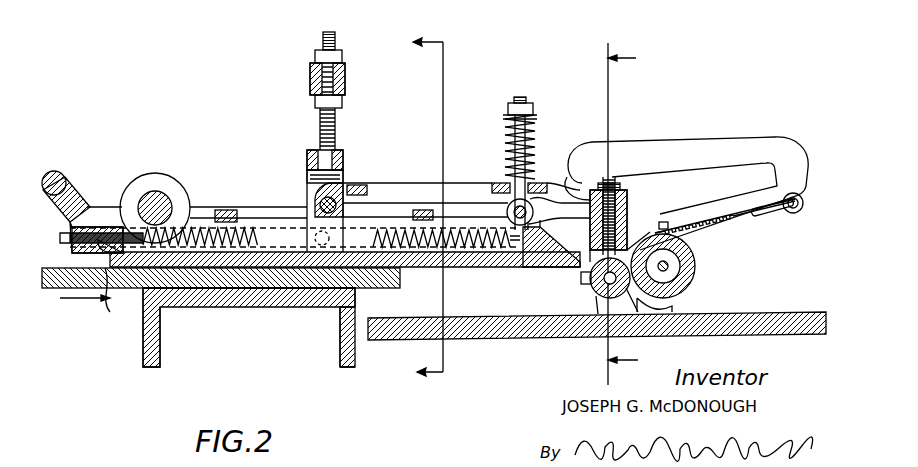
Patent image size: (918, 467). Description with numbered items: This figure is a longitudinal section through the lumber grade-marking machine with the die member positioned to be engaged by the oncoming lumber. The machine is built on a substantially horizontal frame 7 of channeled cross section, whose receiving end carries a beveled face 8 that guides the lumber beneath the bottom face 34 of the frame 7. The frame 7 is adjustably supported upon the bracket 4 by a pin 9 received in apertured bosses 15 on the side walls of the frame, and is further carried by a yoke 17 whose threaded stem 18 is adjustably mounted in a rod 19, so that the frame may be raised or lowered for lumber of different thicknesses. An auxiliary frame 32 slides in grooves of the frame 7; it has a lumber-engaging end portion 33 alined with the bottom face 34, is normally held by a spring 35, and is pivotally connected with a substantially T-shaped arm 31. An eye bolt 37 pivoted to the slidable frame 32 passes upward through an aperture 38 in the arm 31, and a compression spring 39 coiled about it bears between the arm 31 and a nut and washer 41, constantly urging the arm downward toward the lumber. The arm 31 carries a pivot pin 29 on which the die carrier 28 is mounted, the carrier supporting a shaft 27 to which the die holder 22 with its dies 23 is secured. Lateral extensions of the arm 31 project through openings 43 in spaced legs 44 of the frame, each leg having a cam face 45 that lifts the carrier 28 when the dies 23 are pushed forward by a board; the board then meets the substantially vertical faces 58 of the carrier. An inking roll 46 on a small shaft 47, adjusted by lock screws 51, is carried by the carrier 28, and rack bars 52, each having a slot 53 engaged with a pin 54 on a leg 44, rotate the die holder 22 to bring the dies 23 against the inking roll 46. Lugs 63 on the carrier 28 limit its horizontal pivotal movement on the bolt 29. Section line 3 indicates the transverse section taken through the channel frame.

The section line 3- 3 is at (428, 212).
The bracket 4 is at (260, 292).
The frame 7 is at (257, 210).
The beveled face 8 is at (360, 214).
The pin 9 is at (155, 200).
The apertured bosses 15 is at (167, 183).
The yoke 17 is at (309, 157).
The threaded stem 18 is at (328, 32).
The rod 19 is at (310, 78).
The die holder 22 is at (606, 292).
The dies 23 is at (588, 278).
The shaft 27 is at (634, 237).
The die carrier 28 is at (676, 303).
The pivot pin 29 is at (611, 182).
The T-shaped arm 31 is at (563, 185).
The auxiliary frame 32 is at (230, 210).
The lumber-engaging end portion 33 is at (545, 257).
The bottom face 34 is at (480, 290).
The spring 35 is at (392, 225).
The eye bolt 37 is at (515, 100).
The aperture 38 is at (508, 188).
The compression spring 39 is at (532, 152).
The nut and washer 41 is at (531, 104).
The openings 43 is at (758, 165).
The legs 44 is at (673, 148).
The cam face 45 is at (711, 210).
The inking roll 46 is at (696, 262).
The shaft 47 is at (670, 266).
The lock screws 51 is at (666, 222).
The rack bars 52 is at (726, 224).
The slot 53 is at (764, 214).
The pin 54 is at (801, 196).
The vertical faces 58 is at (600, 292).
The lugs 63 is at (570, 195).